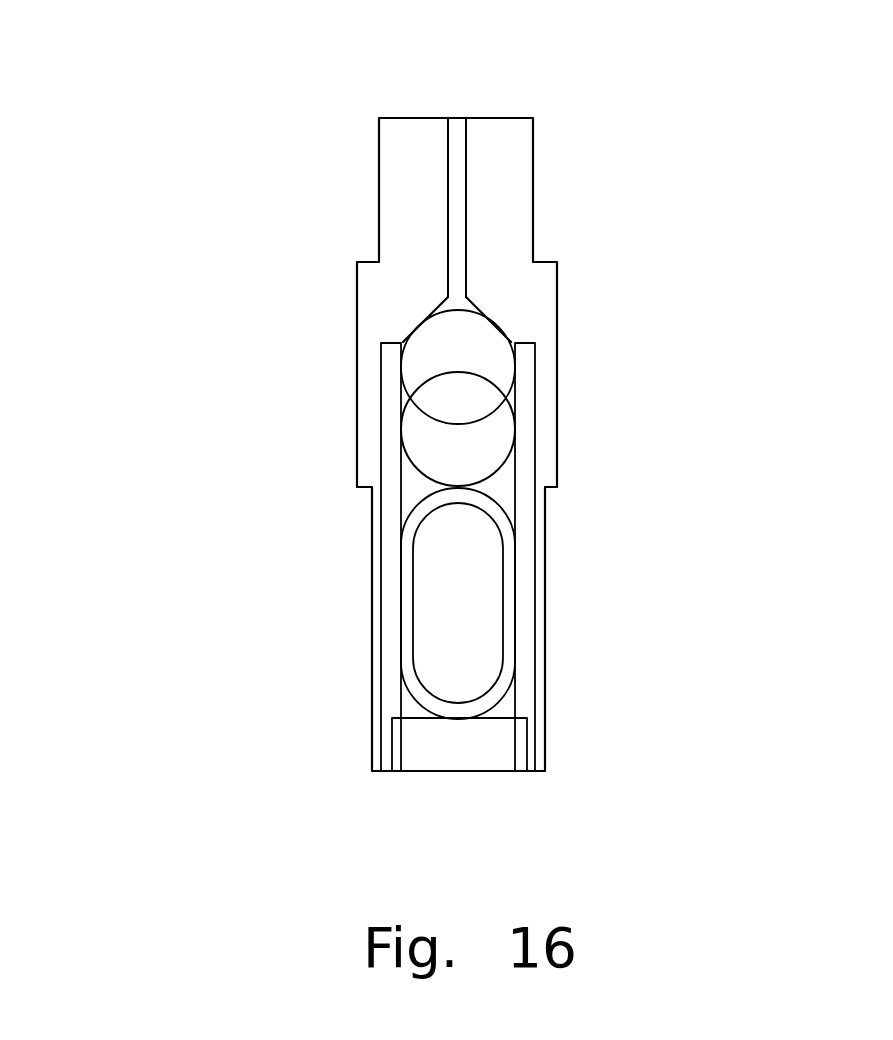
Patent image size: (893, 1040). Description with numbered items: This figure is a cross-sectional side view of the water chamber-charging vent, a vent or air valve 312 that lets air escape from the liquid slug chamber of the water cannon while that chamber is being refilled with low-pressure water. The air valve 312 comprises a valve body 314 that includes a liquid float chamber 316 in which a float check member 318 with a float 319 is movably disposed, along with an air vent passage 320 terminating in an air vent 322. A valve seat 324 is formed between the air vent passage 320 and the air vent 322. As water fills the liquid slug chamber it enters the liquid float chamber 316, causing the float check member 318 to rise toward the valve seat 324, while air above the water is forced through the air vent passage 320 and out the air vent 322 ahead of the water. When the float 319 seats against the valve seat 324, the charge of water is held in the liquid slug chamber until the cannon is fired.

The vent or air valve 312 is at (580, 230).
The valve body 314 is at (557, 444).
The liquid float chamber 316 is at (545, 512).
The float check member 318 is at (305, 537).
The float 319 is at (480, 356).
The air vent passage 320 is at (340, 688).
The air vent 322 is at (405, 170).
The valve seat 324 is at (462, 310).